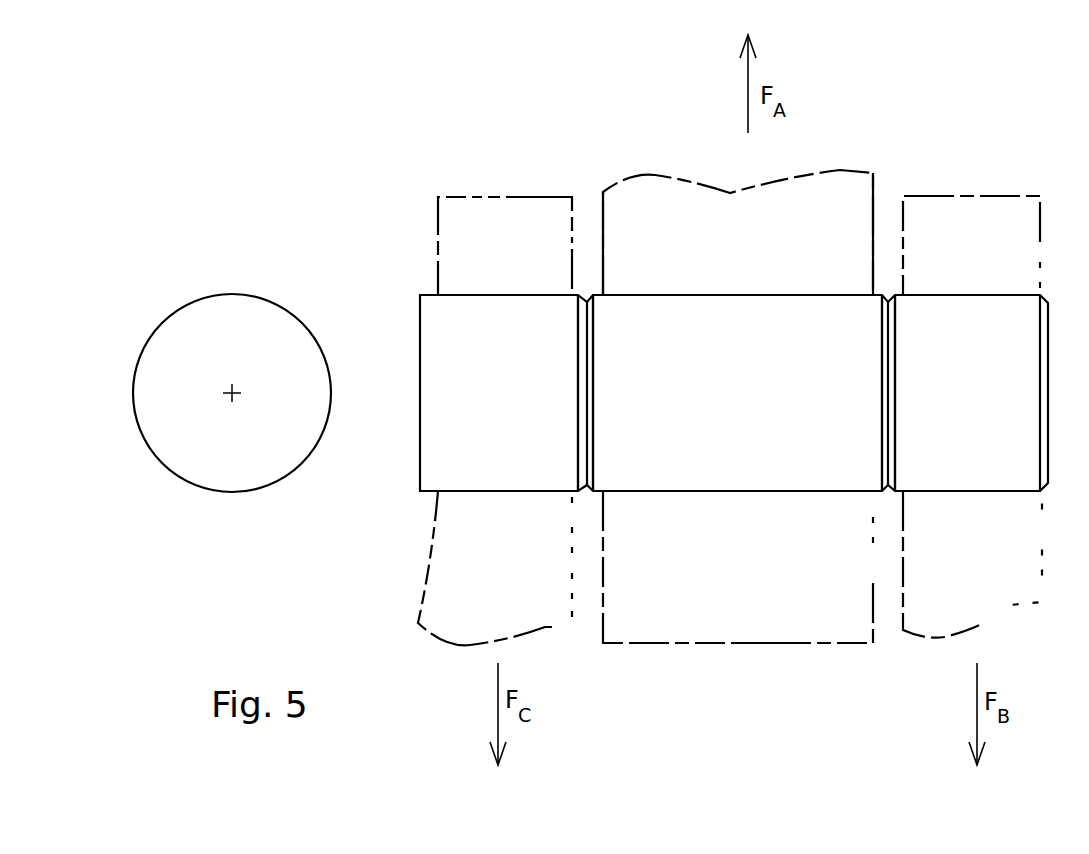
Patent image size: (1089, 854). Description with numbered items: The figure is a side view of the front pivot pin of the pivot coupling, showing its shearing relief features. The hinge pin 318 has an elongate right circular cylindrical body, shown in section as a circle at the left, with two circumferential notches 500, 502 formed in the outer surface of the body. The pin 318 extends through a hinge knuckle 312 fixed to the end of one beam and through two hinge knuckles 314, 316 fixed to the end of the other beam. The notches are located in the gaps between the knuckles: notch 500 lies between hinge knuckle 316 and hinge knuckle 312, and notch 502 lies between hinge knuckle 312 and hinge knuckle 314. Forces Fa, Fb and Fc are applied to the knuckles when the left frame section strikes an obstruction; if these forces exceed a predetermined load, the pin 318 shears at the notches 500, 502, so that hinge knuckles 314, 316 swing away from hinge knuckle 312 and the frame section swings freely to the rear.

The hinge pin 318 is at (212, 250).
The hinge knuckle 316 is at (468, 197).
The hinge knuckle 314 is at (1004, 196).
The hinge knuckle 312 is at (775, 643).
The circumferential notch 500 is at (587, 218).
The circumferential notch 502 is at (892, 226).